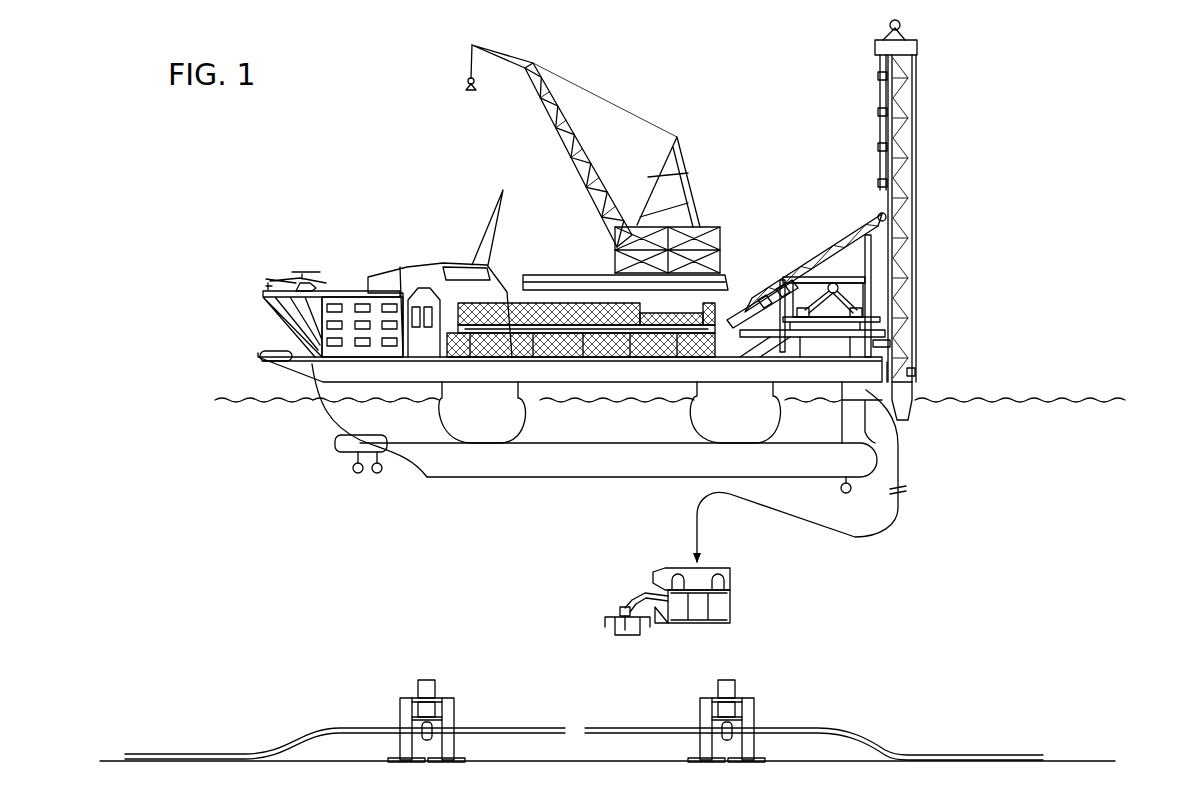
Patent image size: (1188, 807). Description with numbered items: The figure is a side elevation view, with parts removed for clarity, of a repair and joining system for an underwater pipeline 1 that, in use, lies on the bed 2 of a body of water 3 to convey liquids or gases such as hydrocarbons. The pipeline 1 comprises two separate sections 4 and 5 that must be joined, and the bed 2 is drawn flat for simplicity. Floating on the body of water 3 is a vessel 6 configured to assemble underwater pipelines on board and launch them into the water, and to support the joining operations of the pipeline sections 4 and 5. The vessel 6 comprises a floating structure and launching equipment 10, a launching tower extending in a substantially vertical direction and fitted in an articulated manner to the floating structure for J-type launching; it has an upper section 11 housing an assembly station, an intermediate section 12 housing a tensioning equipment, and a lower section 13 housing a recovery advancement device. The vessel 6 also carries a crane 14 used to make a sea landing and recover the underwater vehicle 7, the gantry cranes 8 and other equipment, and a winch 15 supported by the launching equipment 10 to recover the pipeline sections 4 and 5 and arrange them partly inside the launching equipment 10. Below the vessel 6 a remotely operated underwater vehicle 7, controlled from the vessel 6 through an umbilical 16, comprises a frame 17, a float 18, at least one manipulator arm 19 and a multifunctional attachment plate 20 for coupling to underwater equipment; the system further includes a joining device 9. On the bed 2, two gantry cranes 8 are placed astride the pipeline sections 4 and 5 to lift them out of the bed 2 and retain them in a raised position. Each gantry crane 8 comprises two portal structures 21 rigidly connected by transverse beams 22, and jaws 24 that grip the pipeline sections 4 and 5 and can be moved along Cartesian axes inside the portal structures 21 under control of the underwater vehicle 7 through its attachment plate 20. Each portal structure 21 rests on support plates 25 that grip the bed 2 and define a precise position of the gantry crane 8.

The underwater pipeline 1 is at (972, 700).
The bed 2 is at (1078, 770).
The body of water 3 is at (1068, 413).
The pipeline section 4 is at (270, 745).
The pipeline section 5 is at (860, 732).
The vessel 6 is at (627, 255).
The remotely operated underwater vehicle 7 is at (675, 609).
The gantry crane 8 is at (577, 713).
The joining device 9 is at (607, 600).
The launching equipment 10 is at (870, 219).
The upper section 11 is at (926, 219).
The intermediate section 12 is at (925, 210).
The lower section 13 is at (922, 322).
The crane 14 is at (695, 150).
The winch 15 is at (903, 22).
The umbilical 16 is at (878, 534).
The frame 17 is at (723, 625).
The float 18 is at (727, 573).
The manipulator arm 19 is at (640, 597).
The multifunctional attachment plate 20 is at (660, 625).
The portal structure 21 is at (400, 707).
The transverse beam 22 is at (437, 700).
The jaw 24 is at (430, 745).
The support plate 25 is at (390, 762).